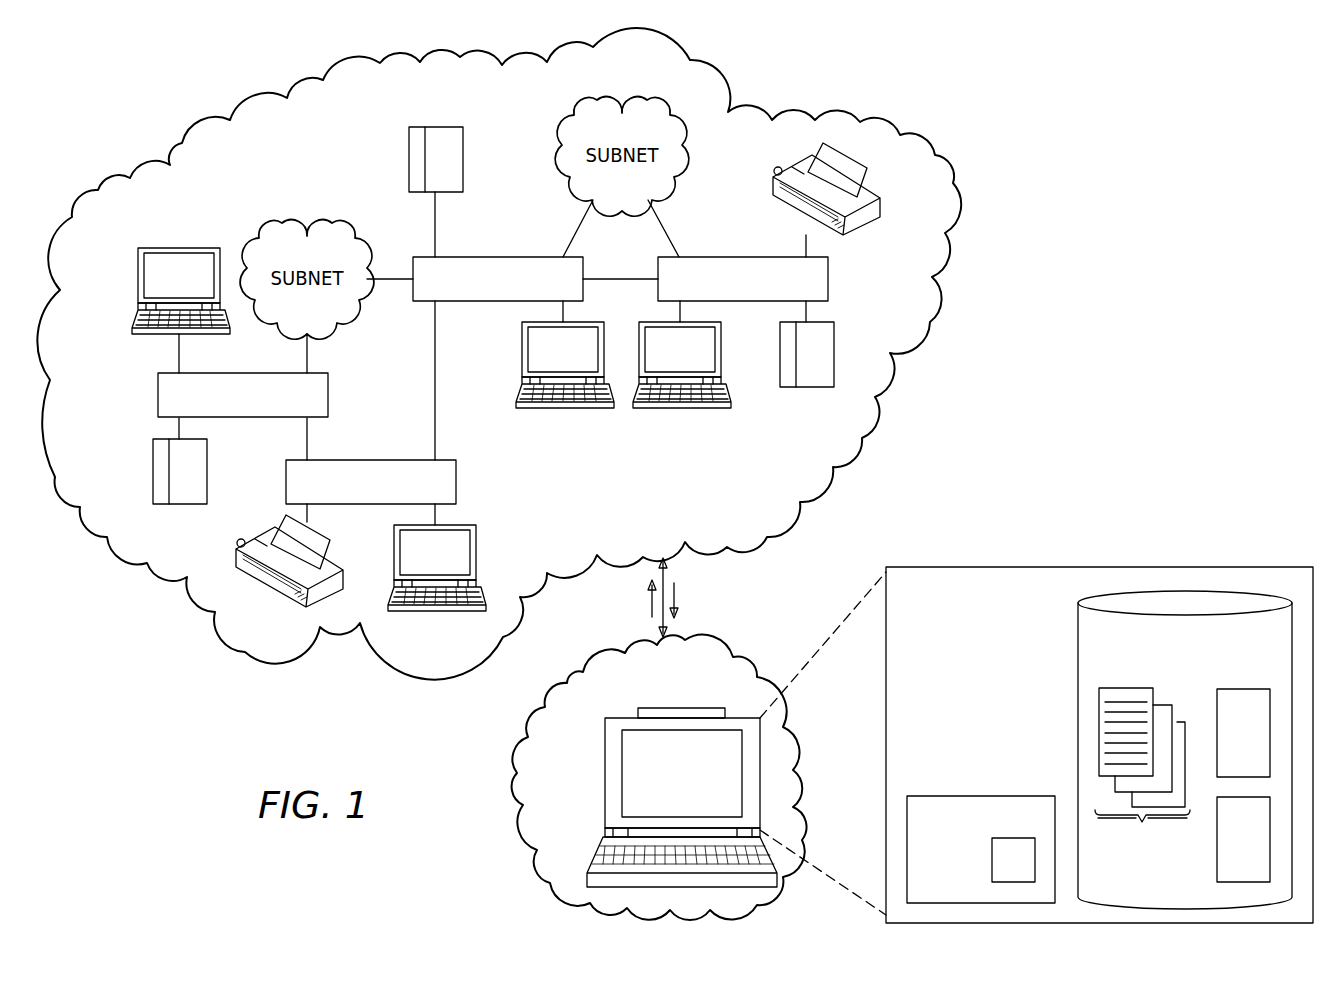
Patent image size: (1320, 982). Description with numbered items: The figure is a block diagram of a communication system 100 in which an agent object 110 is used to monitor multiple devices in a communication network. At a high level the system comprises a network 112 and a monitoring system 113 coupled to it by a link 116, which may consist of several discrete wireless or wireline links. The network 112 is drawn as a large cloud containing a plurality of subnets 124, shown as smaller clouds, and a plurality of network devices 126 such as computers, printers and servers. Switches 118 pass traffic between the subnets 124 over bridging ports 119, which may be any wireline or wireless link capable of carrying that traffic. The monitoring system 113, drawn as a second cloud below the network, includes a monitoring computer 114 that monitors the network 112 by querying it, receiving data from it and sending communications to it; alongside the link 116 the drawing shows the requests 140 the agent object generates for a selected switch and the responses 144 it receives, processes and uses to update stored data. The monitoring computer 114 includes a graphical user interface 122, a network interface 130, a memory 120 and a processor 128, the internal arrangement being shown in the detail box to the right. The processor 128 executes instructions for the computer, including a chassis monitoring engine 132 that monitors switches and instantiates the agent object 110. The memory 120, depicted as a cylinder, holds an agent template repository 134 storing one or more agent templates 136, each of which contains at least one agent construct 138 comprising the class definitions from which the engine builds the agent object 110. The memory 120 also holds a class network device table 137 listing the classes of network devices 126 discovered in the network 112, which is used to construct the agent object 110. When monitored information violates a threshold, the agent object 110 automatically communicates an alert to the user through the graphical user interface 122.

The communication system 100 is at (1110, 259).
The agent object 110 is at (1245, 689).
The network 112 is at (182, 141).
The monitoring system 113 is at (540, 851).
The monitoring computer 114 is at (653, 771).
The link 116 is at (665, 576).
The switch 118 is at (829, 284).
The bridging port 119 is at (390, 279).
The memory 120 is at (1077, 672).
The graphical user interface 122 is at (622, 785).
The subnet 124 is at (302, 223).
The network device 126 is at (174, 249).
The processor 128 is at (970, 794).
The network interface 130 is at (670, 707).
The chassis monitoring engine 132 is at (992, 860).
The agent template repository 134 is at (1138, 741).
The agent template 136 is at (1140, 688).
The class network device table 137 is at (1217, 867).
The agent construct 138 is at (1115, 697).
The request 140 is at (650, 604).
The response 144 is at (677, 600).